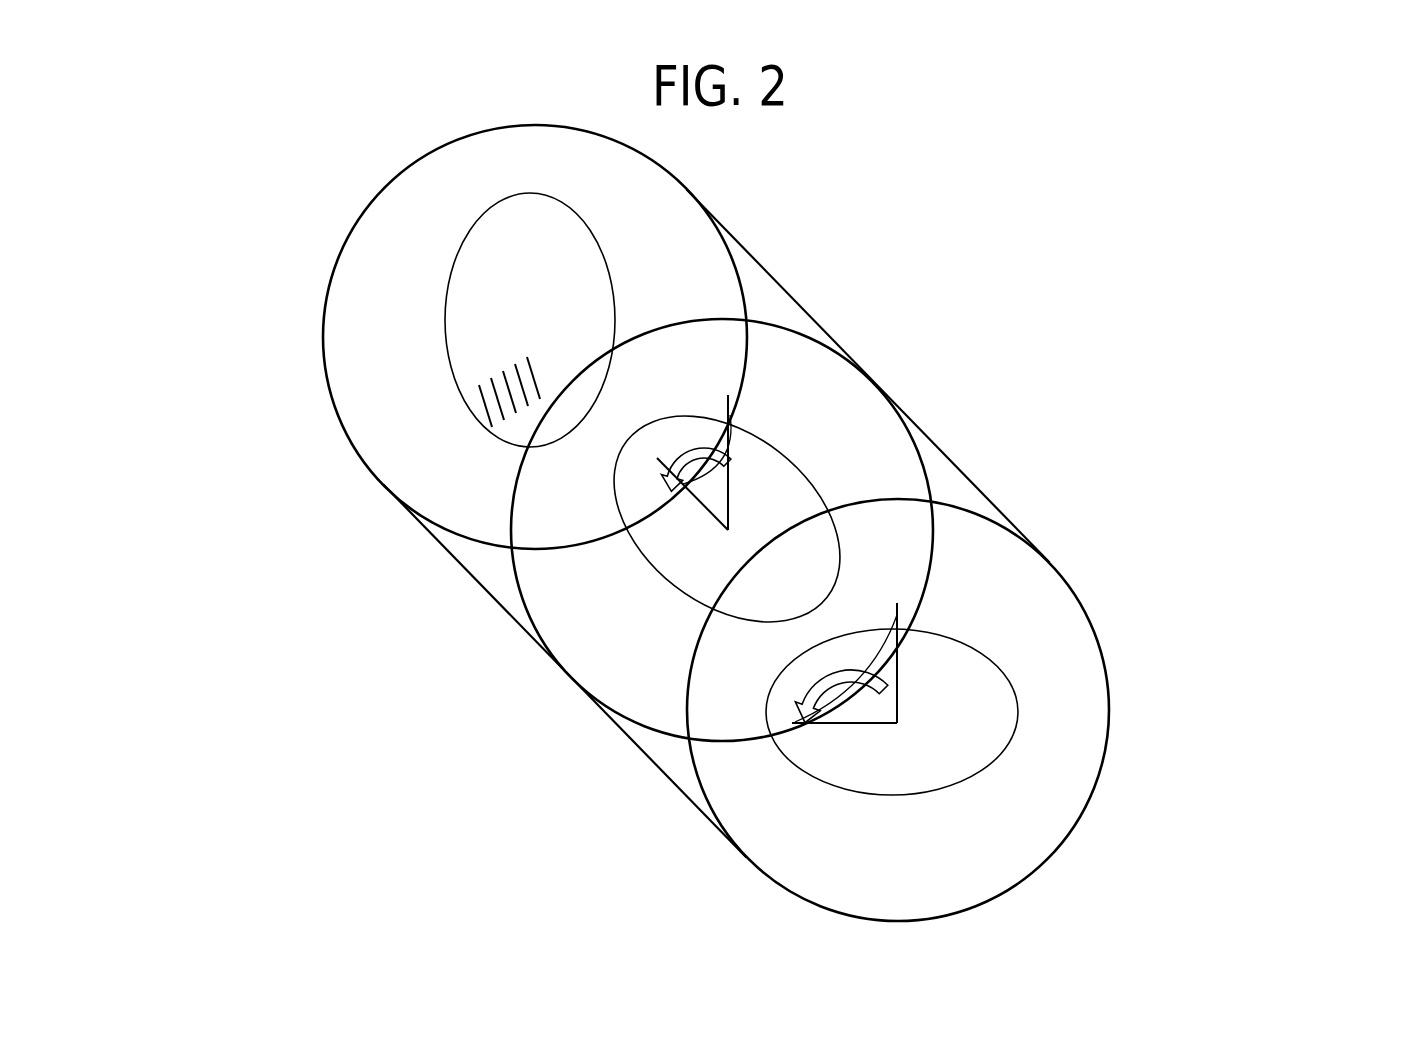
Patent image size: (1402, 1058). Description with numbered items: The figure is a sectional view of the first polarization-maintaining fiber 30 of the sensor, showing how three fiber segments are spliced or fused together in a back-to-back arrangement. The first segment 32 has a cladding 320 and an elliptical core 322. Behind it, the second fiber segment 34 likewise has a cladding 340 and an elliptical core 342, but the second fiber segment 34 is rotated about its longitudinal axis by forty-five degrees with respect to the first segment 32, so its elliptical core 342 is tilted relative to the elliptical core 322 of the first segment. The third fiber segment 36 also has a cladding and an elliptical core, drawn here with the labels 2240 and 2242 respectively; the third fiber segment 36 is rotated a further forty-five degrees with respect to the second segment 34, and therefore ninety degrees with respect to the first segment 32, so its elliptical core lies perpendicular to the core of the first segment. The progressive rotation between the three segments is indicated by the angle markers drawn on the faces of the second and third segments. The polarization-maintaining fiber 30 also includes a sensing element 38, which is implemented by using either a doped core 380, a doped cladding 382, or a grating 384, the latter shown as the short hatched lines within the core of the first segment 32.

The first polarization-maintaining fiber 30 is at (990, 258).
The first segment 32 is at (654, 337).
The cladding 320 is at (650, 212).
The elliptical core 322 is at (540, 295).
The second fiber segment 34 is at (839, 530).
The cladding 340 is at (840, 403).
The elliptical core 342 is at (788, 500).
The third fiber segment 36 is at (1022, 688).
The third disc face 2240 is at (1001, 562).
The third elliptical aperture 2242 is at (982, 684).
The sensing element 38 is at (326, 444).
The doped core 380 is at (478, 299).
The doped cladding 382 is at (390, 399).
The grating 384 is at (490, 402).